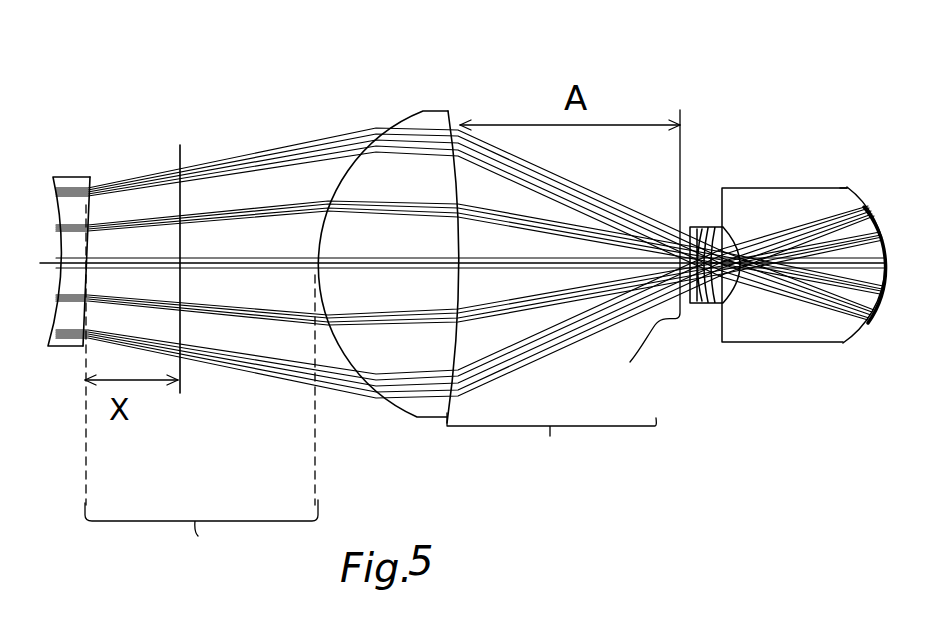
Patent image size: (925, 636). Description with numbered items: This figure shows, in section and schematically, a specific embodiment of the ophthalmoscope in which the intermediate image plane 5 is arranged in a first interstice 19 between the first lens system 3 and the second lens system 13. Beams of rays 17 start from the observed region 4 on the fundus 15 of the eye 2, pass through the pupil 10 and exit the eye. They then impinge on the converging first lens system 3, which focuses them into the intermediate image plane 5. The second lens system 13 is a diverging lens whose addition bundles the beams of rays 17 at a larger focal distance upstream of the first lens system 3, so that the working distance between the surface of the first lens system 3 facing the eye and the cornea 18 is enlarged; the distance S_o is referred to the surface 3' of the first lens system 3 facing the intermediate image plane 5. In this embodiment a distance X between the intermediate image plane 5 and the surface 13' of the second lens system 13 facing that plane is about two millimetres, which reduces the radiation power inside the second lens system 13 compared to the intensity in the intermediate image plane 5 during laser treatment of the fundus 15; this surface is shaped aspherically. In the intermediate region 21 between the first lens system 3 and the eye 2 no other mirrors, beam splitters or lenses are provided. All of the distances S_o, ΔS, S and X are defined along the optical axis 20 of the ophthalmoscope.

The second lens system 13 is at (59, 217).
The surface of the second lens system facing the intermediate image plane 13' is at (99, 231).
The intermediate image plane 5 is at (178, 197).
The optical axis 20 is at (210, 263).
The first lens system 3 is at (360, 280).
The surface of the lens system facing the intermediate image plane 3' is at (470, 223).
The beams of rays 17 is at (587, 233).
The cornea 18 is at (645, 259).
The pupil 10 is at (712, 228).
The eye 2 is at (767, 347).
The fundus of the eye 15 is at (847, 199).
The observed region 4 is at (882, 215).
The intermediate region 21 is at (551, 448).
The first interstice 19 is at (201, 541).